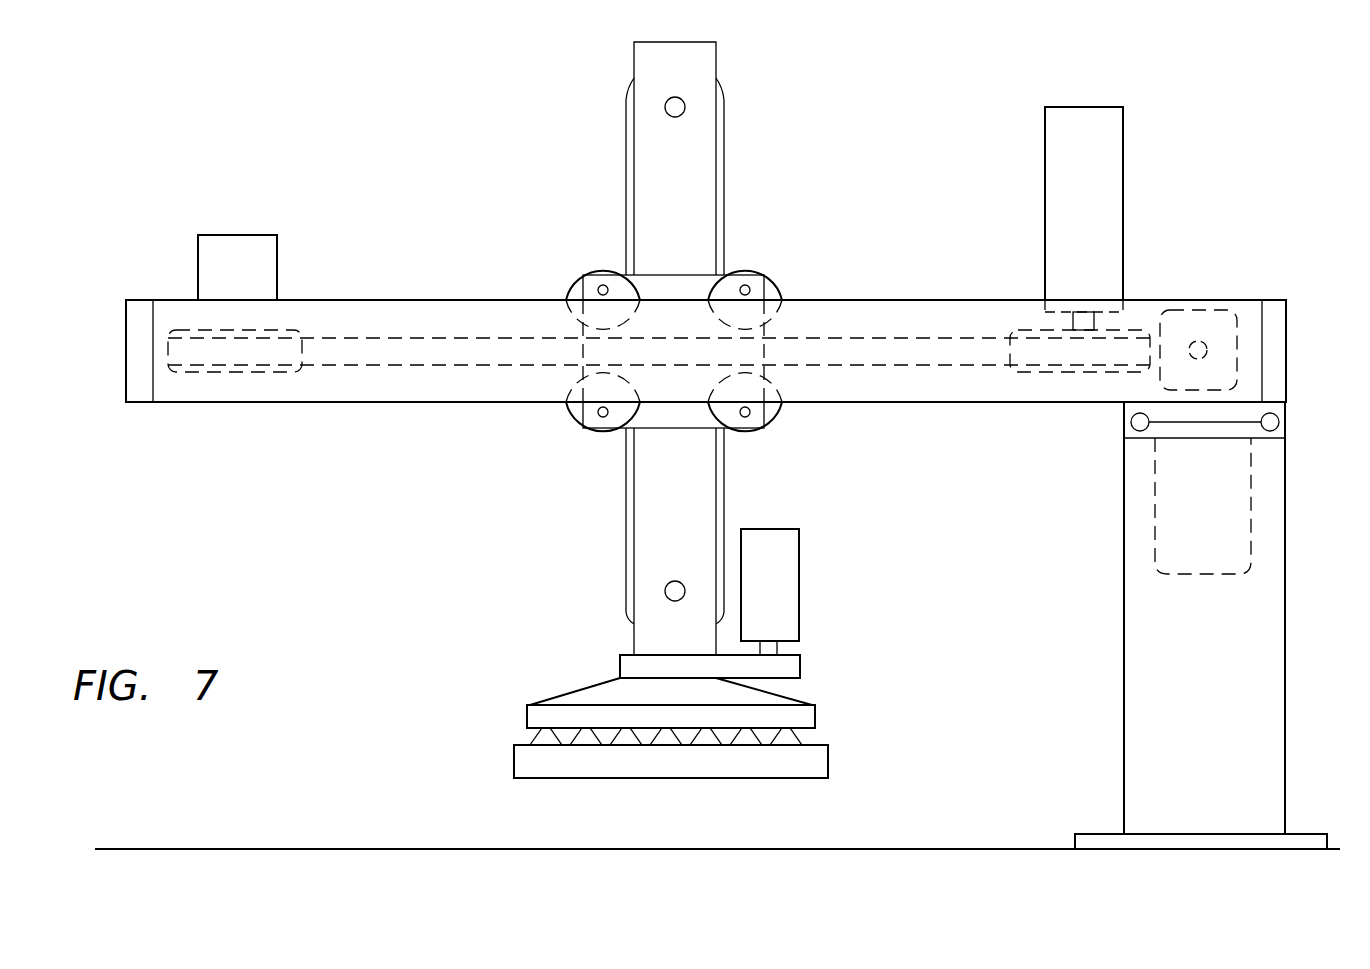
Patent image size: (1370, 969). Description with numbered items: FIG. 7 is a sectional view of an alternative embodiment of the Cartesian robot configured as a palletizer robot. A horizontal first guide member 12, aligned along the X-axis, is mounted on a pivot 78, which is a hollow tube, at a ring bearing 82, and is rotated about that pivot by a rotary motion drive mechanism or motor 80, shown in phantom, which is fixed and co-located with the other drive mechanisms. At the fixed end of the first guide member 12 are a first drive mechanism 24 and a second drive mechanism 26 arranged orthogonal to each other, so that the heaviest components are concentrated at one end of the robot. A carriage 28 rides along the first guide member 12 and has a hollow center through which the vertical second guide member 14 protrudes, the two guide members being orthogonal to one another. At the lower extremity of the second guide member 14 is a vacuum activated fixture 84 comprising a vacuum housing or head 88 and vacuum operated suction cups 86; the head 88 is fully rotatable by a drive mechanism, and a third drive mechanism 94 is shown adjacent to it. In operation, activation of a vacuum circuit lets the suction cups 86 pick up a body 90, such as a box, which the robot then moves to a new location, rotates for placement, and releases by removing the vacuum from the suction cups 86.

The first guide member 12 is at (858, 270).
The second guide member 14 is at (806, 110).
The first drive mechanism 24 is at (1183, 318).
The second drive mechanism 26 is at (1058, 150).
The carriage 28 is at (620, 287).
The pivot 78 is at (1138, 648).
The rotary motion drive mechanism 80 is at (1163, 540).
The ring bearing 82 is at (1124, 428).
The vacuum activated fixture 84 is at (570, 665).
The vacuum operated suction cups 86 is at (753, 740).
The vacuum housing or head 88 is at (537, 712).
The body 90 is at (522, 750).
The third drive mechanism 94 is at (790, 571).